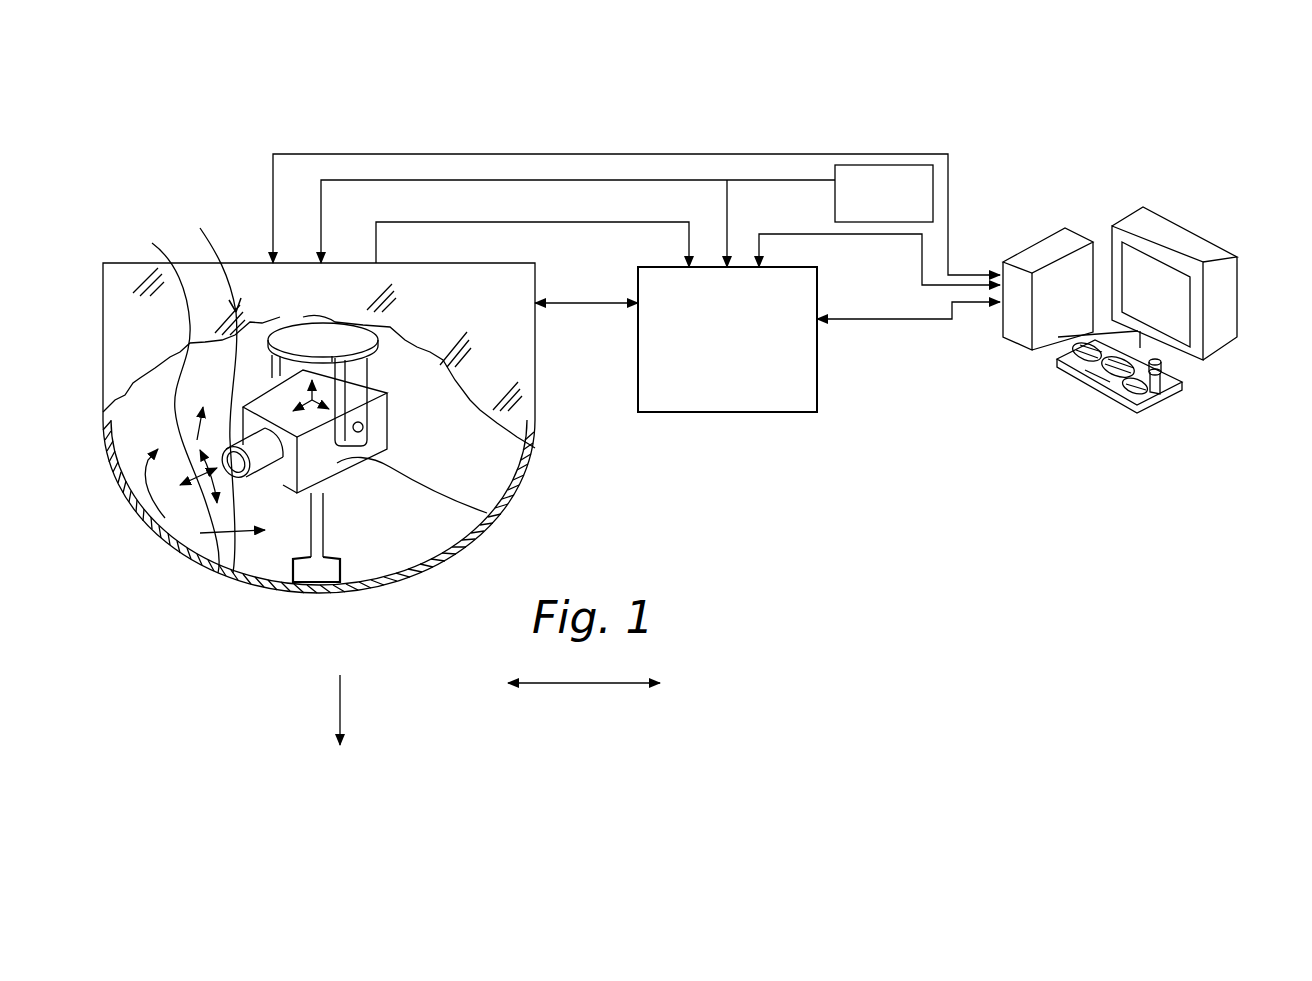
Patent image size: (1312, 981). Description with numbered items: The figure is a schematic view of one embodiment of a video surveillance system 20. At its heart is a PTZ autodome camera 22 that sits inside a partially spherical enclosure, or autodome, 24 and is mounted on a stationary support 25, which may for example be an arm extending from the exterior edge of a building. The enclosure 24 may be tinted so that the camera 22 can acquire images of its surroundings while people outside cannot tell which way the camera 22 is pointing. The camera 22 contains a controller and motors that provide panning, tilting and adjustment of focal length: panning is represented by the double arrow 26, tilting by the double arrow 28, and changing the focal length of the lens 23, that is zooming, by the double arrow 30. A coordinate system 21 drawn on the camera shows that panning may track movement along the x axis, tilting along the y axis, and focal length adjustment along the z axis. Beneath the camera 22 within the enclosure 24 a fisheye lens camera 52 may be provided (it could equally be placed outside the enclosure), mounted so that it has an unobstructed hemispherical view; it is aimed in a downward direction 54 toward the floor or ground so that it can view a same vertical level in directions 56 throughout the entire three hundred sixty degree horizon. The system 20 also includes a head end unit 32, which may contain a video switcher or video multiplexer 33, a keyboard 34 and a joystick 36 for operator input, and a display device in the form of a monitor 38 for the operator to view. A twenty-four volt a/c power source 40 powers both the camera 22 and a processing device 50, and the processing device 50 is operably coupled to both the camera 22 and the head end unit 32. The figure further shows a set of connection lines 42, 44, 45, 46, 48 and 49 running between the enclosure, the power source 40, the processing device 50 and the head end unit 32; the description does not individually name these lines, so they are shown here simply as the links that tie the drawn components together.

The video surveillance system 20 is at (526, 126).
The coordinate system 21 is at (303, 493).
The PTZ autodome camera 22 is at (497, 510).
The lens 23 is at (207, 388).
The partially spherical enclosure 24 is at (518, 422).
The support 25 is at (280, 320).
The double arrow 26 is at (218, 573).
The double arrow 28 is at (173, 395).
The double arrow 30 is at (233, 573).
The head end unit 32 is at (1055, 444).
The video switcher or video multiplexer 33 is at (1037, 237).
The keyboard 34 is at (1073, 377).
The joystick 36 is at (1177, 410).
The monitor 38 is at (1195, 305).
The 24 volt a/c power source 40 is at (870, 165).
The power line 42 is at (695, 180).
The control line 44 is at (645, 222).
The communication line 45 is at (902, 236).
The signal line 46 is at (650, 154).
The data link 48 is at (608, 304).
The control link 49 is at (928, 320).
The processing device 50 is at (817, 410).
The fisheye lens camera 52 is at (320, 570).
The downward direction 54 is at (345, 700).
The directions 56 is at (575, 685).